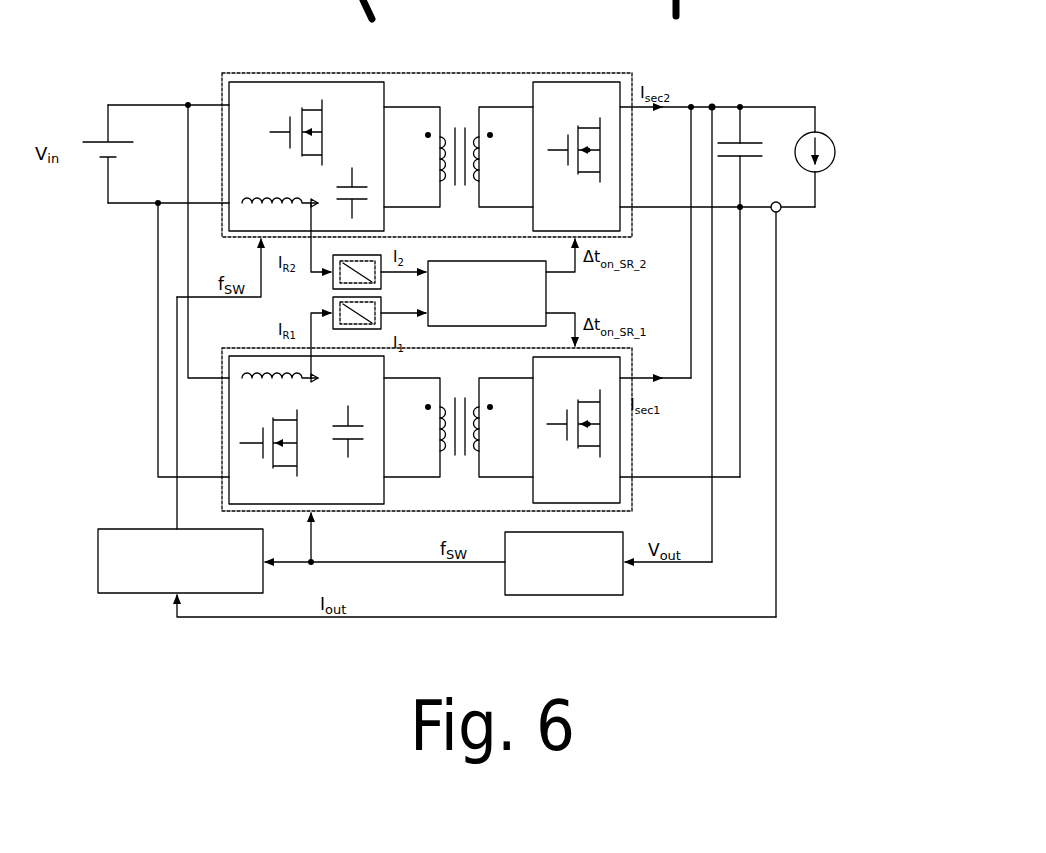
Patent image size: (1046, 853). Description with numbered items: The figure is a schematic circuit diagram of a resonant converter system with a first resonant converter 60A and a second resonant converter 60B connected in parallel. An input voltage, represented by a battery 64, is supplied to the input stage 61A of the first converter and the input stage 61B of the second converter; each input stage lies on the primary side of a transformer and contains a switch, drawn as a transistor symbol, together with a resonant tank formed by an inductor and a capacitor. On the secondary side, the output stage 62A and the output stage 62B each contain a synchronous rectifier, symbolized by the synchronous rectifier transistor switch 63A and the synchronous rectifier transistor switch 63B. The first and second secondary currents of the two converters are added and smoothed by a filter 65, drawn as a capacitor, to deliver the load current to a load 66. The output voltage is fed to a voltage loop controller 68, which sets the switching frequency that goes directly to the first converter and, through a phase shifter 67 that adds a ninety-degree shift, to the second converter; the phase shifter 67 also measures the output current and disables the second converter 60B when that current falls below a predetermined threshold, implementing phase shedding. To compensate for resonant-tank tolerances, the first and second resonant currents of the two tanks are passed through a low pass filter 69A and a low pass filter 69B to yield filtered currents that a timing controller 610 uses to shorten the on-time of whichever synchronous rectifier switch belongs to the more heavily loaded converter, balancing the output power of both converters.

The battery 64 is at (96, 139).
The first resonant converter 60A is at (405, 512).
The second resonant converter 60B is at (422, 72).
The input stage 61A is at (233, 431).
The input stage 61B is at (373, 84).
The output stage 62A is at (712, 455).
The output stage 62B is at (602, 125).
The synchronous rectifier transistor switch 63A is at (585, 443).
The synchronous rectifier transistor switch 63B is at (583, 129).
The filter 65 is at (751, 143).
The load 66 is at (835, 138).
The phase shifter 67 is at (130, 531).
The voltage loop controller 68 is at (601, 595).
The low pass filter 69A is at (361, 328).
The low pass filter 69B is at (355, 253).
The timing controller 610 is at (446, 263).